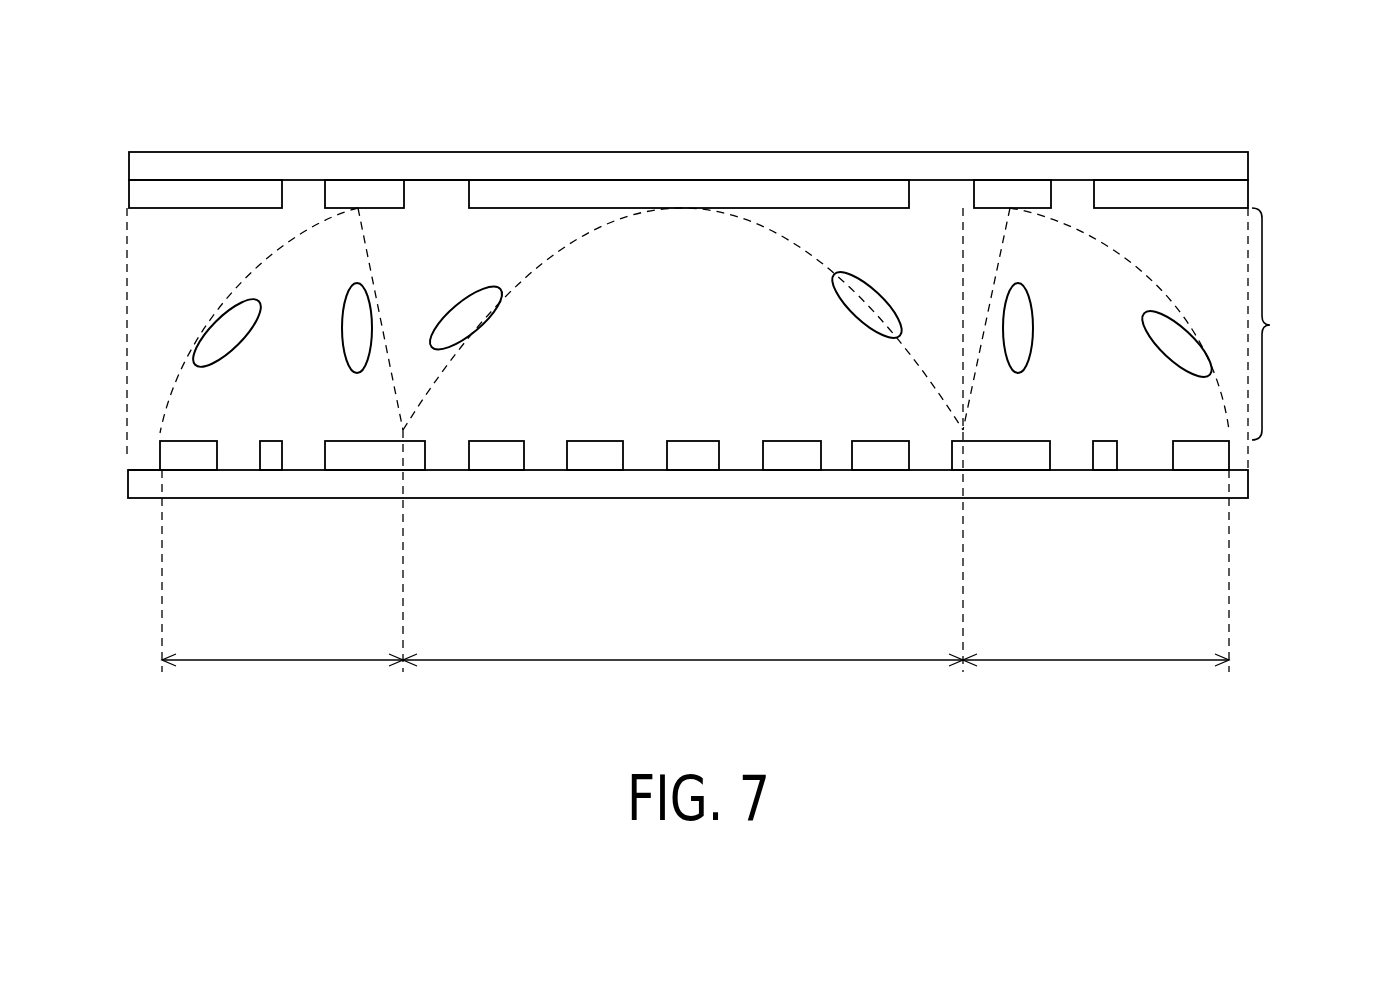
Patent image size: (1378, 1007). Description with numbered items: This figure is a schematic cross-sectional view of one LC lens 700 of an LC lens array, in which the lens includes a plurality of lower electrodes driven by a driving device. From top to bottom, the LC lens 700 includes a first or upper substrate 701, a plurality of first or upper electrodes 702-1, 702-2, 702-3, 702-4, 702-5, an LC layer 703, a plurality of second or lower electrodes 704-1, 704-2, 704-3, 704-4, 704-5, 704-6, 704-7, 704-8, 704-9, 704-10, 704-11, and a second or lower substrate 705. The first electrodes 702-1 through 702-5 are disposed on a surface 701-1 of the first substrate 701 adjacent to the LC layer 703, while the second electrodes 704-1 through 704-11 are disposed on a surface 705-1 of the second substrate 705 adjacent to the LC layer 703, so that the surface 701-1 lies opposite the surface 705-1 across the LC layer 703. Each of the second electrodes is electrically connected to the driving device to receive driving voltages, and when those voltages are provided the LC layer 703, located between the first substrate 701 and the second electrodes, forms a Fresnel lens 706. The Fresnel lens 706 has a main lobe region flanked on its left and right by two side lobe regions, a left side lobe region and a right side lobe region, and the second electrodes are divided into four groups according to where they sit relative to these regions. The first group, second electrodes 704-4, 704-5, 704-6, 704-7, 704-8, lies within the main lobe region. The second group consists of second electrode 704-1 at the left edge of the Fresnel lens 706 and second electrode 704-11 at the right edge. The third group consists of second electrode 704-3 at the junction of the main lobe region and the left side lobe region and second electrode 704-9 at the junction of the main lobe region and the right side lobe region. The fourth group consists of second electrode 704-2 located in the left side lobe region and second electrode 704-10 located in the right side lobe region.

The LC lens 700 is at (1347, 693).
The first substrate 701 is at (783, 165).
The surface of the first substrate 701-1 is at (502, 180).
The first electrode 702-1 is at (190, 190).
The first electrode 702-2 is at (385, 190).
The first electrode 702-3 is at (657, 195).
The first electrode 702-4 is at (1012, 190).
The first electrode 702-5 is at (1180, 190).
The LC layer 703 is at (757, 324).
The second electrode 704-1 is at (198, 461).
The second electrode 704-2 is at (270, 462).
The second electrode 704-3 is at (347, 462).
The second electrode 704-4 is at (498, 462).
The second electrode 704-5 is at (588, 462).
The second electrode 704-6 is at (690, 462).
The second electrode 704-7 is at (790, 462).
The second electrode 704-8 is at (877, 462).
The second electrode 704-9 is at (1022, 462).
The second electrode 704-10 is at (1105, 462).
The second electrode 704-11 is at (1216, 462).
The second substrate 705 is at (443, 483).
The surface of the second substrate 705-1 is at (153, 470).
The Fresnel lens 706 is at (302, 232).